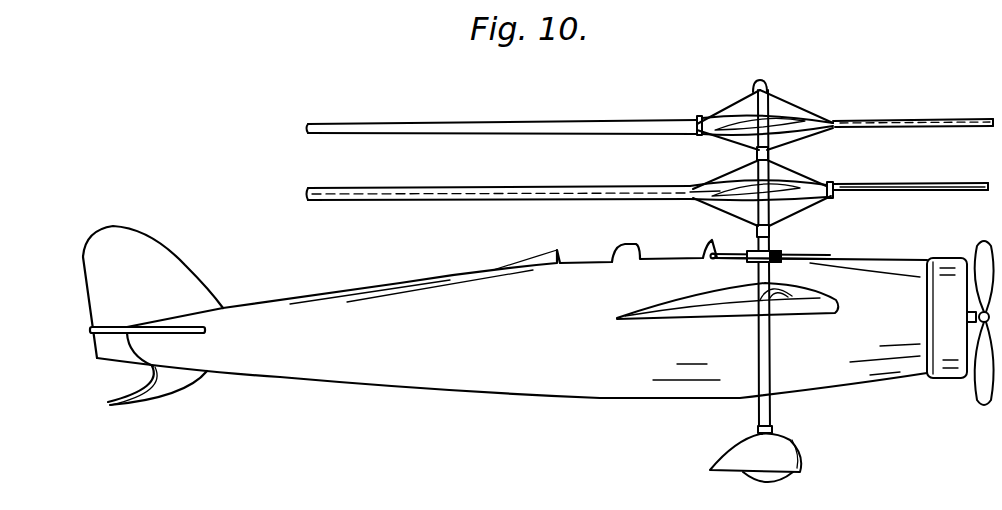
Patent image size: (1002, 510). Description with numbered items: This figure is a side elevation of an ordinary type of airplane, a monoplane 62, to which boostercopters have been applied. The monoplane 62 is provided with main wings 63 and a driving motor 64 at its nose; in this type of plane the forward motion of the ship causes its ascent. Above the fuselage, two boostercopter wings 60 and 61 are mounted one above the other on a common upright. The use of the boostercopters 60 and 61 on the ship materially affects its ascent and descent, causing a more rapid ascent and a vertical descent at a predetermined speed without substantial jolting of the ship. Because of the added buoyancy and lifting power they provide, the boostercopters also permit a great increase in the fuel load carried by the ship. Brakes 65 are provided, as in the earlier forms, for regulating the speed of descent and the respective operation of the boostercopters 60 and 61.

The boostercopter wing 60 is at (772, 183).
The boostercopter wing 61 is at (777, 113).
The monoplane 62 is at (657, 380).
The main wings 63 is at (830, 297).
The driving motor 64 is at (953, 370).
The brakes 65 is at (783, 253).